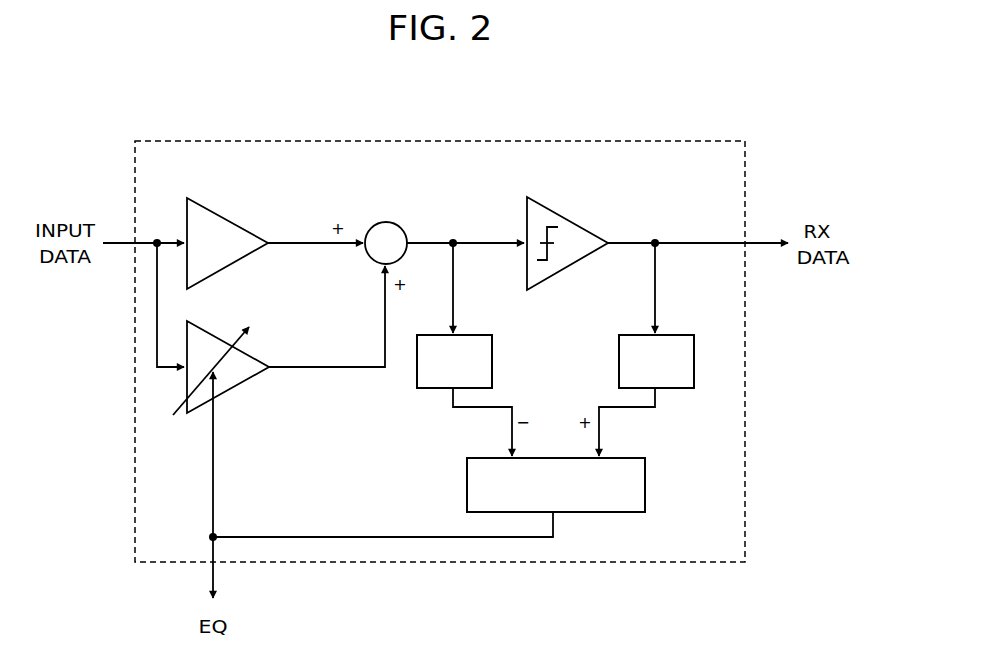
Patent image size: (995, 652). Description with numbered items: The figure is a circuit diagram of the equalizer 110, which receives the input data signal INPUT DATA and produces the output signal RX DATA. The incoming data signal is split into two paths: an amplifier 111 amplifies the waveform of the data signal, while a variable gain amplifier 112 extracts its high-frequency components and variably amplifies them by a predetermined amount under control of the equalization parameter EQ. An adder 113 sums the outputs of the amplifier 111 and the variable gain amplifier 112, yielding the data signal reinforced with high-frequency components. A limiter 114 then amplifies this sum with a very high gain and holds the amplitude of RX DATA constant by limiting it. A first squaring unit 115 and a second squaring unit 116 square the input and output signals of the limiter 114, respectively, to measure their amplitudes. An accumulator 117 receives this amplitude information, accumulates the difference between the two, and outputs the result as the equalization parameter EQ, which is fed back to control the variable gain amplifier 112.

The equalizer 110 is at (628, 141).
The amplifier 111 is at (233, 220).
The variable gain amplifier 112 is at (250, 352).
The adder 113 is at (387, 222).
The limiter 114 is at (572, 217).
The first squaring unit 115 is at (462, 333).
The second squaring unit 116 is at (668, 333).
The accumulator 117 is at (608, 457).